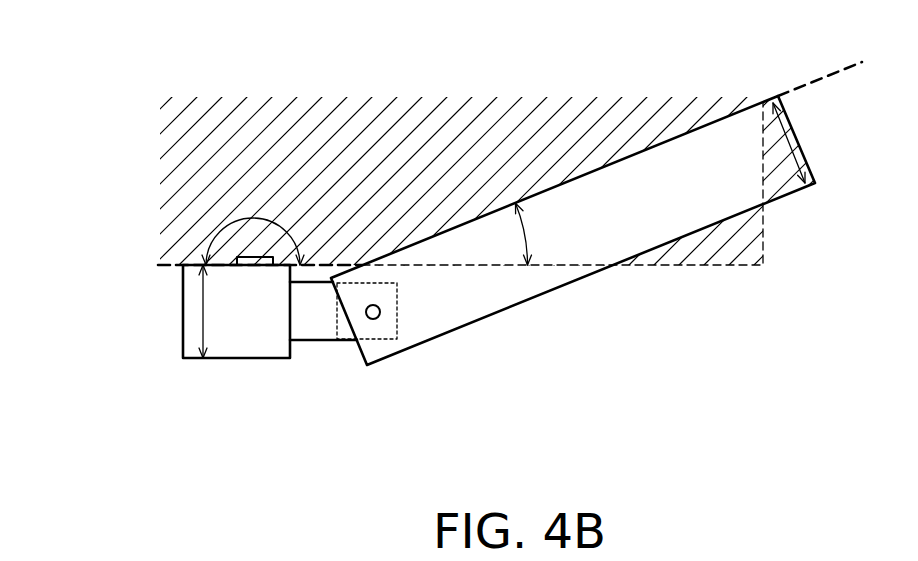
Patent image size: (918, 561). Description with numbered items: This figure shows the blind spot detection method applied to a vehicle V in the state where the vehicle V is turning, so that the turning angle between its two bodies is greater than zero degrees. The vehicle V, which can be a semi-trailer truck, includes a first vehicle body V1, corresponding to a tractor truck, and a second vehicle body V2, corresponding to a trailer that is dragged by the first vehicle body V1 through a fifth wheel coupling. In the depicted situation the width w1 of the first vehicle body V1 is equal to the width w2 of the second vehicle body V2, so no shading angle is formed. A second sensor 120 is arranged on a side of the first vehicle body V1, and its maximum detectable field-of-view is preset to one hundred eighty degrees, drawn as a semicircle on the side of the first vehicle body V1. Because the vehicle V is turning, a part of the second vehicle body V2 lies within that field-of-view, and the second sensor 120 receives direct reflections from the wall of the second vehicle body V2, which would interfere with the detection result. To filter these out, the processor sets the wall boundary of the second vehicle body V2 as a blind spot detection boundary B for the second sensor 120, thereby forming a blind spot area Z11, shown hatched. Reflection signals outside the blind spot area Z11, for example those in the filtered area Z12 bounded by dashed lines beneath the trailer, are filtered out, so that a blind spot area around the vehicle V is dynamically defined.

The second sensor 120 is at (245, 266).
The vehicle V is at (458, 292).
The first vehicle body V1 is at (235, 360).
The second vehicle body V2 is at (573, 269).
The blind spot area Z11 is at (408, 125).
The filtered area Z12 is at (763, 238).
The blind spot detection boundary B is at (828, 74).
The width of the first vehicle body w1 is at (203, 310).
The width of the second vehicle body w2 is at (790, 140).